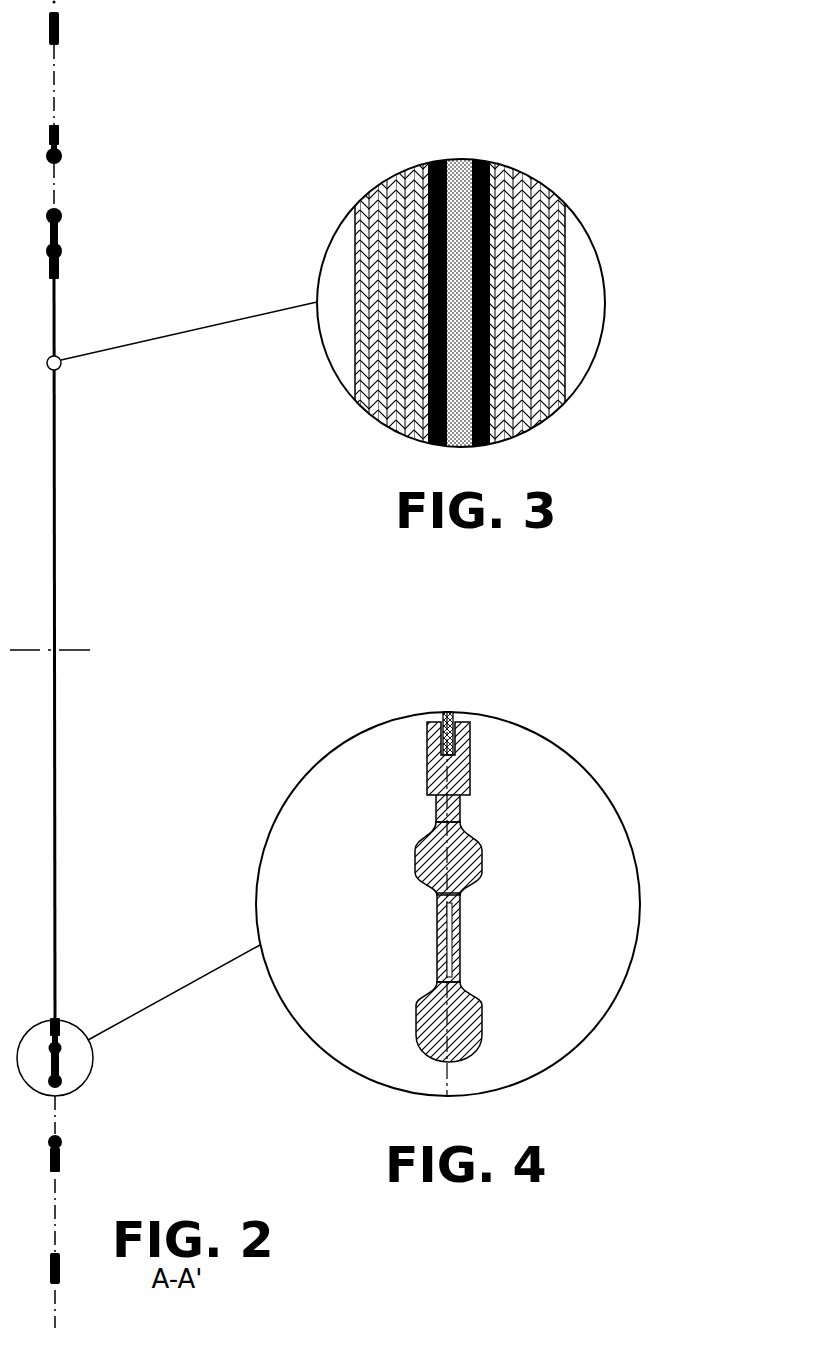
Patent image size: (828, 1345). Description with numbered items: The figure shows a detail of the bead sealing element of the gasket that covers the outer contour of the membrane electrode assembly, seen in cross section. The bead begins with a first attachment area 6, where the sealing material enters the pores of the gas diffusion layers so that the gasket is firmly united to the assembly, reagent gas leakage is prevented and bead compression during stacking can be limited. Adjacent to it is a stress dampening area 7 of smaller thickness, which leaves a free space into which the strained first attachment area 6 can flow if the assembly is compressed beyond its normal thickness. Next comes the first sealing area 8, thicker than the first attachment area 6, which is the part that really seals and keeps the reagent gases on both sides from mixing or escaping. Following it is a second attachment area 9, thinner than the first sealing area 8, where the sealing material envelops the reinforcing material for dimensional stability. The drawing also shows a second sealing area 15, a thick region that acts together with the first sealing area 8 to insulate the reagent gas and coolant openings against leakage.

The first attachment area 6 is at (463, 743).
The stress dampening area 7 is at (432, 810).
The first sealing area 8 is at (478, 857).
The second attachment area 9 is at (460, 937).
The second sealing area 15 is at (427, 1030).